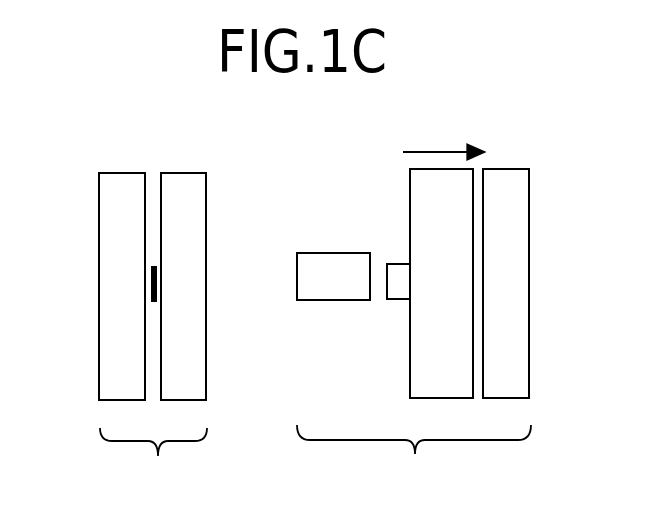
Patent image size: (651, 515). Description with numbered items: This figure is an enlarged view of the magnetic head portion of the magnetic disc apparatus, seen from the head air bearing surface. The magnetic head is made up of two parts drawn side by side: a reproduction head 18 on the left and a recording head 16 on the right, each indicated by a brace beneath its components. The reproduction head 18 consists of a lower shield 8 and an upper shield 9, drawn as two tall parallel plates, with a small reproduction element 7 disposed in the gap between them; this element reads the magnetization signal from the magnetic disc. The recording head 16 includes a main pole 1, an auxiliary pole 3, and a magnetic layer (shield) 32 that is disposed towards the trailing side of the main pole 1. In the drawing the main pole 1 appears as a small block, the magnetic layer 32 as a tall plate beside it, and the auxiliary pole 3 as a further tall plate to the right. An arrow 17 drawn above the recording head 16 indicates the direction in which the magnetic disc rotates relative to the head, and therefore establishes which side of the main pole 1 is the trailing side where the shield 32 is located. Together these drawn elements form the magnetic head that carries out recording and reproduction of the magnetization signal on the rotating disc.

The main pole 1 is at (338, 265).
The auxiliary pole 3 is at (529, 202).
The reproduction element 7 is at (148, 283).
The lower shield 8 is at (112, 195).
The upper shield 9 is at (195, 222).
The recording head 16 is at (441, 293).
The direction of disc rotation 17 is at (433, 152).
The reproduction head 18 is at (151, 333).
The magnetic layer (shield) 32 is at (410, 202).